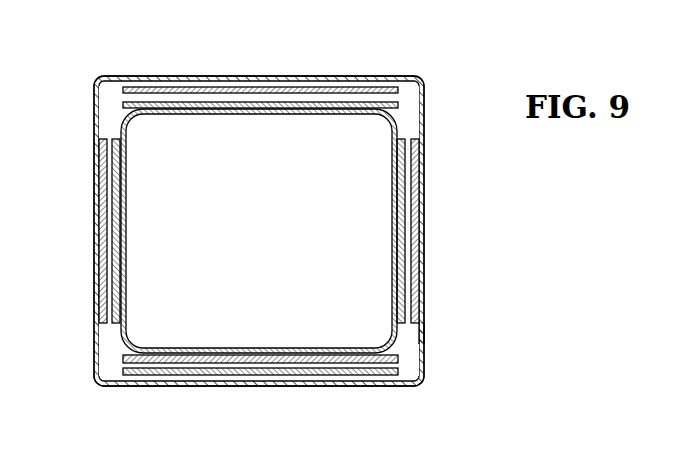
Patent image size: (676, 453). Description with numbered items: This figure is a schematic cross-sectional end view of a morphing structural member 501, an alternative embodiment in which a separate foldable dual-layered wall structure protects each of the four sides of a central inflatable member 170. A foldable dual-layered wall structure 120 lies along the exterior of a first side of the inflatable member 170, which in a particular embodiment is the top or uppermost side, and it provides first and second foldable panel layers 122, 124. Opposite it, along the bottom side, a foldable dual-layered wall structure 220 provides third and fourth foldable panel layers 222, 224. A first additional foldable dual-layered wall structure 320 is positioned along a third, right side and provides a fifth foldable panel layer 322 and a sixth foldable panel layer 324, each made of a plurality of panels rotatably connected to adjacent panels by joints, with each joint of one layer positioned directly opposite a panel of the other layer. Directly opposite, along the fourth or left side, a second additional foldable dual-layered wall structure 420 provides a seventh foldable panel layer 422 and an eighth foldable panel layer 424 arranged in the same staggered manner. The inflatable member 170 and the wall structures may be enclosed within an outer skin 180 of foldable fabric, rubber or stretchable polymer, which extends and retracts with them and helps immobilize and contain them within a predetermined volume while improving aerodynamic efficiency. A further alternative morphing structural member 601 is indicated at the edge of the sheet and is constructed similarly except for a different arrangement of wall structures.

The morphing structural member 501 is at (422, 63).
The foldable dual-layered wall structure 120 is at (345, 77).
The first foldable panel layer 122 is at (183, 100).
The second foldable panel layer 124 is at (267, 100).
The inflatable member 170 is at (124, 351).
The outer skin 180 is at (425, 332).
The foldable dual-layered wall structure 220 is at (175, 367).
The third foldable panel layer 222 is at (231, 361).
The fourth foldable panel layer 224 is at (337, 374).
The first additional foldable dual-layered wall structure 320 is at (423, 277).
The fifth foldable panel layer 322 is at (405, 164).
The sixth foldable panel layer 324 is at (416, 225).
The second additional foldable dual-layered wall structure 420 is at (102, 175).
The seventh foldable panel layer 422 is at (113, 232).
The eighth foldable panel layer 424 is at (102, 292).
The morphing structural member 601 is at (525, 452).